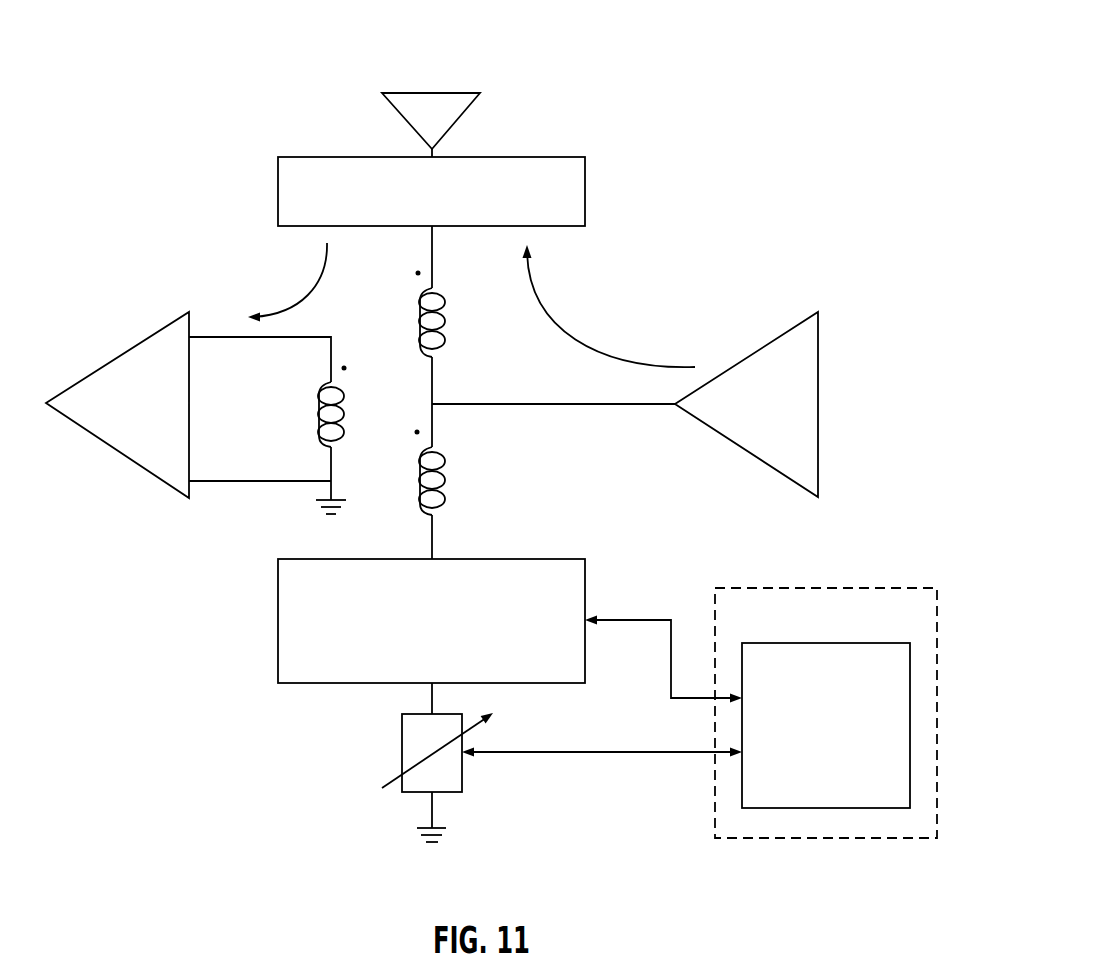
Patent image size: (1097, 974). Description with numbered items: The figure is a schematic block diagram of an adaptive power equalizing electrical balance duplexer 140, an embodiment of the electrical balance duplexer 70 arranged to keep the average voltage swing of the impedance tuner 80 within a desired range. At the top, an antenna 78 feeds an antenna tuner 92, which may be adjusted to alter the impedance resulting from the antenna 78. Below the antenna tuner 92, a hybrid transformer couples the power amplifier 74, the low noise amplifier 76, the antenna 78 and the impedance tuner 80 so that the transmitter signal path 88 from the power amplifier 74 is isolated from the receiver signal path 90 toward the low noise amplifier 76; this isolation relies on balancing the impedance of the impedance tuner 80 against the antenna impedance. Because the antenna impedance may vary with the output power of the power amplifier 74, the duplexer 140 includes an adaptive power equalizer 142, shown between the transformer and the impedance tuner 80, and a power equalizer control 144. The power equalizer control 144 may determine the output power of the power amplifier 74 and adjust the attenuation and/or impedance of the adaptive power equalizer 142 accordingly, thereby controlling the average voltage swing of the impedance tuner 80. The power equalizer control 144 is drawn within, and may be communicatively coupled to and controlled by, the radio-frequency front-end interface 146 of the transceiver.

The electrical balance duplexer 70 is at (784, 33).
The adaptive power equalizing electrical balance duplexer 140 is at (500, 476).
The antenna 78 is at (431, 88).
The antenna tuner 92 is at (535, 156).
The receiver signal path 90 is at (310, 294).
The low noise amplifier 76 is at (118, 358).
The transmitter signal path 88 is at (568, 322).
The power amplifier 74 is at (820, 405).
The adaptive power equalizer 142 is at (543, 558).
The impedance tuner 80 is at (400, 758).
The radio-frequency front-end interface 146 is at (882, 587).
The power equalizer control 144 is at (828, 810).